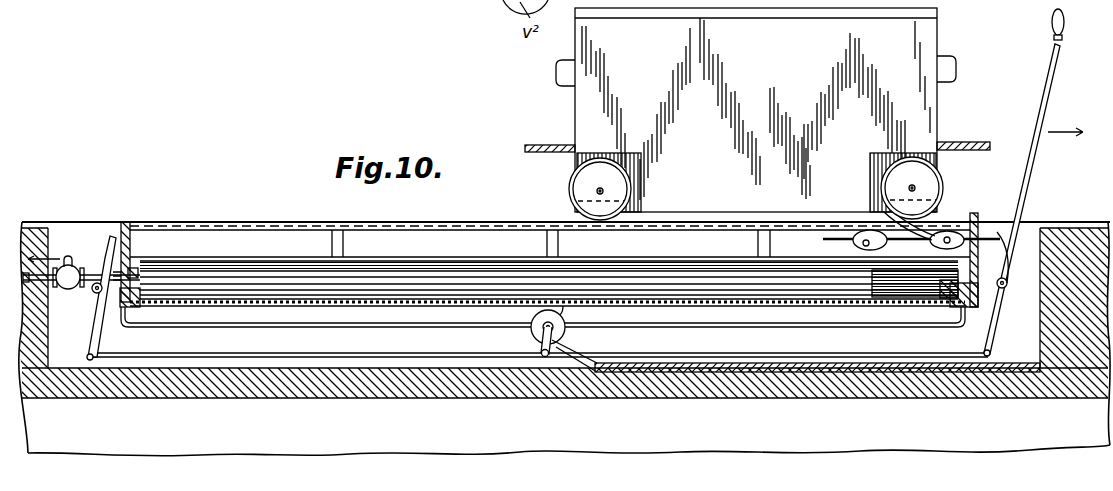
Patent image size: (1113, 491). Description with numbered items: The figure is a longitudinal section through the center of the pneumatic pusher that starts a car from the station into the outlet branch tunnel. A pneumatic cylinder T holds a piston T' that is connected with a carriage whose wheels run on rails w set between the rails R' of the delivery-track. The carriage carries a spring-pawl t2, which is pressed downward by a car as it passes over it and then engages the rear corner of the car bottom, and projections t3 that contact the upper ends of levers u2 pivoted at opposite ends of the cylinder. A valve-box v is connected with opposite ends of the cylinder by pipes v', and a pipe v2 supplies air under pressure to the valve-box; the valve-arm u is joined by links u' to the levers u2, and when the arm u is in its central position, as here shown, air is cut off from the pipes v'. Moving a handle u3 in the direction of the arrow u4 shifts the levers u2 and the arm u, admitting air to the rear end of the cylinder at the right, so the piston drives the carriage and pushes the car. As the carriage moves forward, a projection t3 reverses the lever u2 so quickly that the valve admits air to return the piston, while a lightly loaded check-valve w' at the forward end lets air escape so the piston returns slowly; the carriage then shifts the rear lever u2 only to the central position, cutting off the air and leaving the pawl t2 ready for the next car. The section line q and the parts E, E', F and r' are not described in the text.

The rails of the delivery-track R' is at (564, 325).
The section line q is at (497, 222).
The rails w is at (550, 228).
The check-valve w' is at (81, 261).
The pneumatic cylinder T is at (547, 295).
The piston T' is at (915, 299).
The rod r' is at (549, 306).
The valve-arm u is at (540, 344).
The links u' is at (543, 331).
The levers u2 is at (92, 325).
The handle u3 is at (1059, 60).
The arrow u4 is at (1066, 122).
The valve-box v is at (566, 324).
The pipes v' is at (464, 331).
The pipe v2 is at (1016, 366).
The spring-pawl t2 is at (876, 202).
The projections t3 is at (823, 240).
The car E is at (756, 110).
The car frame E' is at (757, 177).
The car wheel F is at (756, 188).